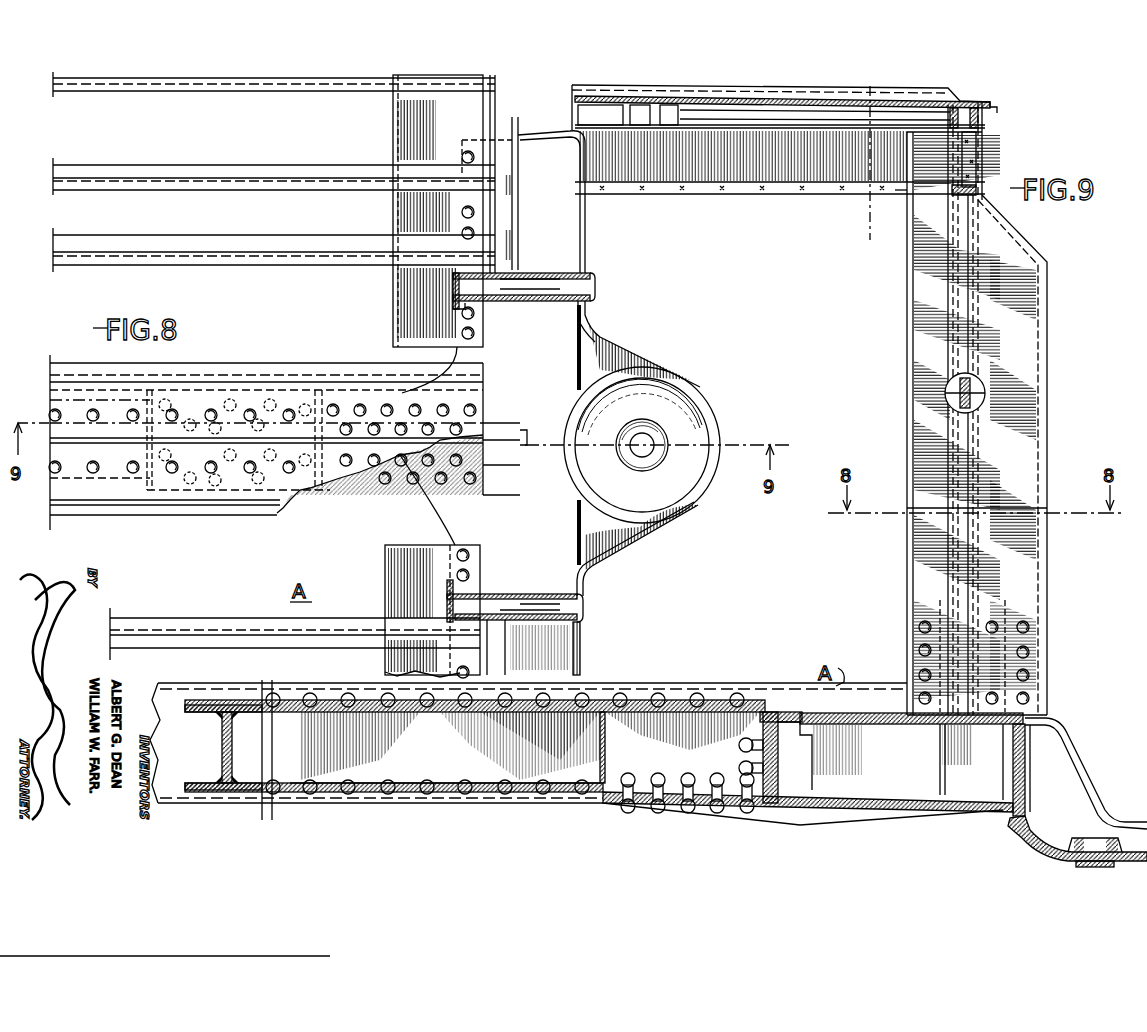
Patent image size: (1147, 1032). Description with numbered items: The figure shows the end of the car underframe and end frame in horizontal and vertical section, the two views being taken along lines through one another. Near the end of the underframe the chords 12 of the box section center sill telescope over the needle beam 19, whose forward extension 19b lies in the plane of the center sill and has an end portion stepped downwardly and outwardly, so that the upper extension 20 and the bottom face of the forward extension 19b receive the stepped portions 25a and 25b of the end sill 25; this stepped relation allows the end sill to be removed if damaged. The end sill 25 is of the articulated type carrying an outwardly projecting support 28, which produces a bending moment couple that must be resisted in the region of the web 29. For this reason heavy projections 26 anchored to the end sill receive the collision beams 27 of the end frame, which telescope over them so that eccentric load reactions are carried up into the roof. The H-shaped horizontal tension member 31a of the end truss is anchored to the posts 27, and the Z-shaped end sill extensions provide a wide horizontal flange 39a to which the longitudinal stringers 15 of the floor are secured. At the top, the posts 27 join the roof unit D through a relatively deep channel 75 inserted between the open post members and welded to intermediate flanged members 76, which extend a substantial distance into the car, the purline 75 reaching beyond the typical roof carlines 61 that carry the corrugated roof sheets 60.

In FIG. 8, the longitudinal stringer 15 is at (280, 196).
In FIG. 8, the horizontal flange 39a is at (393, 322).
In FIG. 8, the collision beam 27 is at (560, 272).
In FIG. 9, the collision beam 27 is at (925, 323).
In FIG. 8, the outwardly projecting support 28 is at (657, 507).
In FIG. 9, the outwardly projecting support 28 is at (1065, 752).
In FIG. 8, the center sill chord 12 is at (213, 515).
In FIG. 9, the center sill chord 12 is at (652, 688).
In FIG. 8, the upper extension 20 is at (336, 488).
In FIG. 9, the upper extension 20 is at (779, 710).
In FIG. 8, the heavy projection 26 is at (565, 610).
In FIG. 9, the heavy projection 26 is at (915, 640).
In FIG. 9, the roof sheet 60 is at (578, 90).
In FIG. 9, the roof carline 61 is at (670, 120).
In FIG. 9, the intermediate flanged member 76 is at (774, 118).
In FIG. 9, the channel 75 is at (830, 177).
In FIG. 9, the needle beam 19 is at (868, 86).
In FIG. 9, the forward extension 19b is at (372, 770).
In FIG. 9, the horizontal tension member 31a is at (944, 395).
In FIG. 9, the end sill 25 is at (910, 782).
In FIG. 9, the stepped portion 25a is at (845, 780).
In FIG. 9, the stepped portion 25b is at (773, 802).
In FIG. 9, the web 29 is at (978, 790).
In FIG. 9, the side sheet B is at (1048, 350).
In FIG. 9, the roof unit D is at (1000, 110).